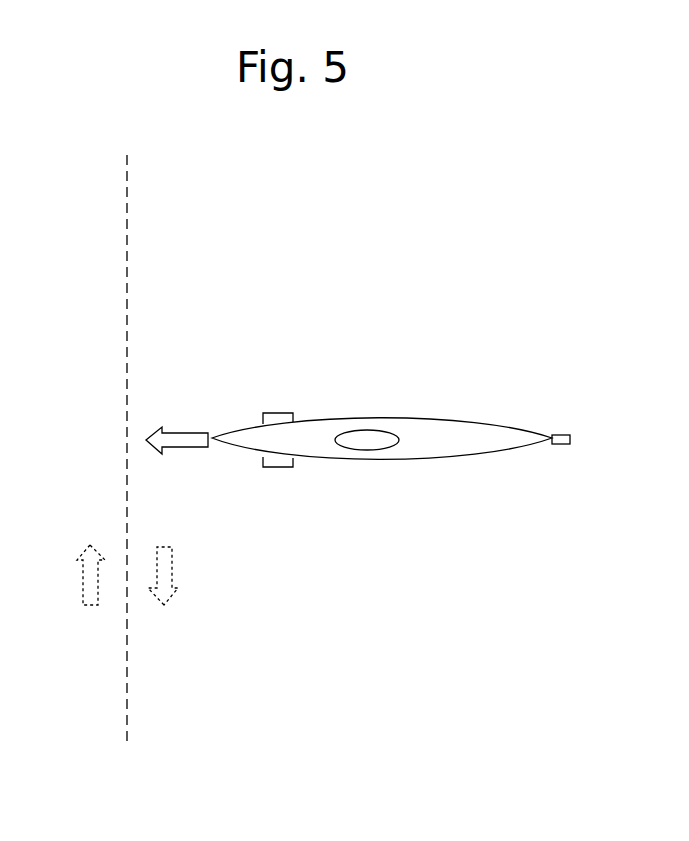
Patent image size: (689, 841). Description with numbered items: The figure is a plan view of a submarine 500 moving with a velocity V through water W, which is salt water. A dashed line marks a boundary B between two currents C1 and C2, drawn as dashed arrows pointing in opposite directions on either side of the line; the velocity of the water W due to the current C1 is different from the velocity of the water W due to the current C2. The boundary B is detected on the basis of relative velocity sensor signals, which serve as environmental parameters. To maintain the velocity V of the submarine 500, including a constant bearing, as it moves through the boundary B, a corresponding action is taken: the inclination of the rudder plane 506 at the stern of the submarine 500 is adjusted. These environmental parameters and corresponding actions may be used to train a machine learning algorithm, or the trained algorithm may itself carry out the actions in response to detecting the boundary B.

The submarine 500 is at (313, 420).
The rudder plane 506 is at (558, 445).
The velocity V is at (190, 433).
The water W is at (393, 305).
The boundary B is at (128, 713).
The current C1 is at (173, 560).
The current C2 is at (82, 572).